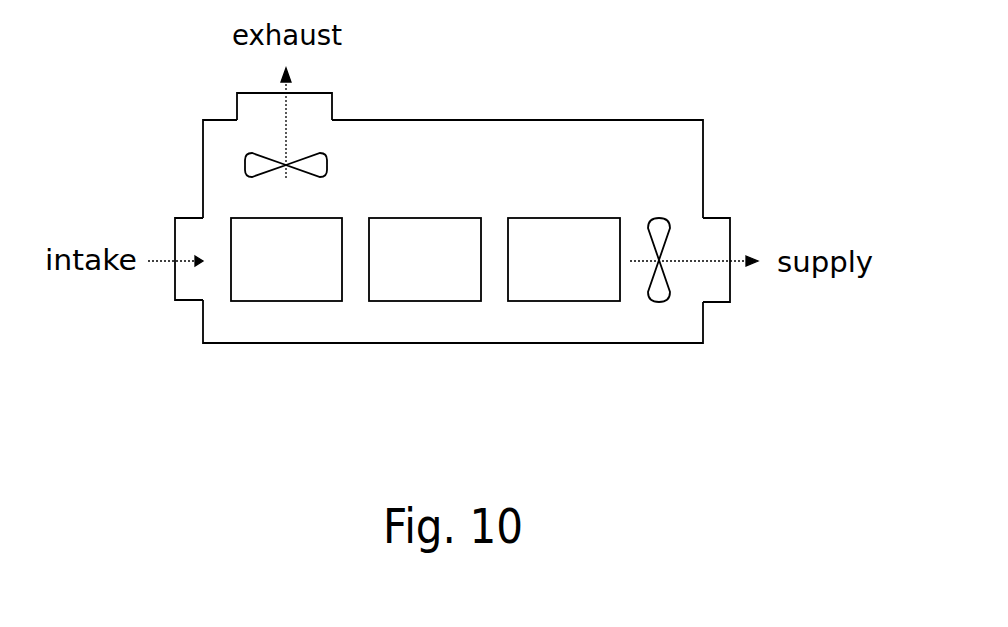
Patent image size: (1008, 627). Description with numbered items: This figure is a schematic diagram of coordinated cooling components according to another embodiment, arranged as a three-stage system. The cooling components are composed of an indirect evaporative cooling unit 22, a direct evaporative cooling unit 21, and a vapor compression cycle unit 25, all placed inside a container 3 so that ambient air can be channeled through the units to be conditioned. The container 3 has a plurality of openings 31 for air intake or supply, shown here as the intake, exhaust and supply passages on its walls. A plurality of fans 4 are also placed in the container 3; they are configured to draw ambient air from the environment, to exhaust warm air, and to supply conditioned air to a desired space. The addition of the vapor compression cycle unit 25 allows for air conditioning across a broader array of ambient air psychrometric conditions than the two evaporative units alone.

The container 3 is at (547, 118).
The openings 31 is at (235, 102).
The fans 4 is at (317, 155).
The indirect evaporative cooling unit (IEC) 22 is at (303, 301).
The direct evaporative cooling unit (DEC) 21 is at (430, 301).
The vapor compression cycle unit (VCC) 25 is at (567, 301).